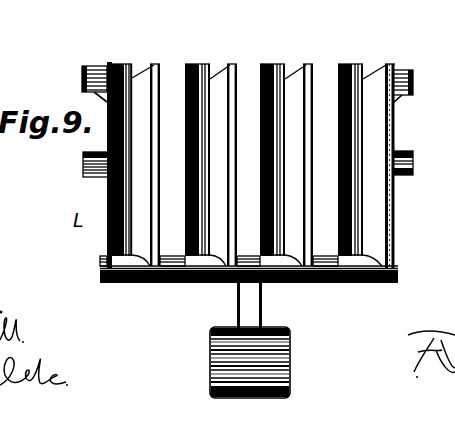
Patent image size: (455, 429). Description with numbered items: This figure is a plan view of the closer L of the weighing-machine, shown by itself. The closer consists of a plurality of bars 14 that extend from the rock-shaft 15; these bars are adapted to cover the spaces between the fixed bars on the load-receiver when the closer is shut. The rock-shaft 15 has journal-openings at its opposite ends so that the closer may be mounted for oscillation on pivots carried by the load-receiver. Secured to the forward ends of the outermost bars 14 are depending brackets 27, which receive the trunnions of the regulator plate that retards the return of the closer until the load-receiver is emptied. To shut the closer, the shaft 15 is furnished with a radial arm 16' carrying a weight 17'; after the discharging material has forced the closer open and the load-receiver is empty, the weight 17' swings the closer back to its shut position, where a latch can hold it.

The bars 14 is at (132, 77).
The depending brackets 27 is at (88, 66).
The rock-shaft 15 is at (152, 283).
The radial arm 16' is at (268, 306).
The weight 17' is at (264, 362).